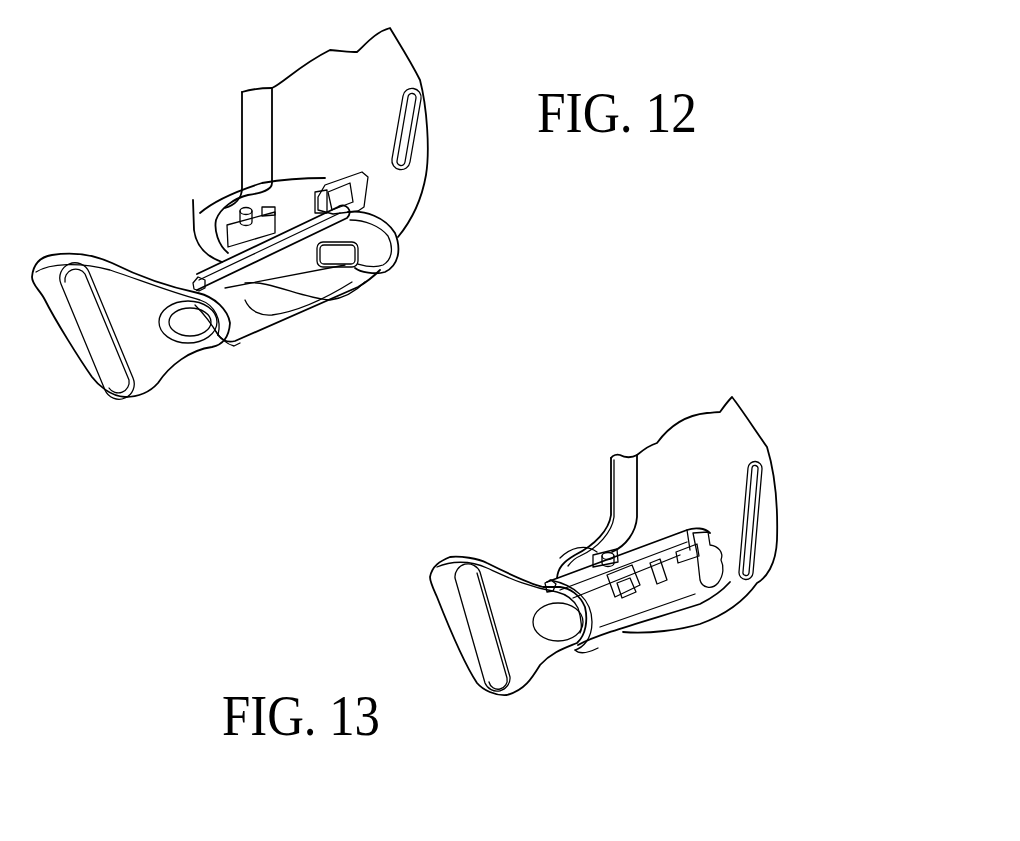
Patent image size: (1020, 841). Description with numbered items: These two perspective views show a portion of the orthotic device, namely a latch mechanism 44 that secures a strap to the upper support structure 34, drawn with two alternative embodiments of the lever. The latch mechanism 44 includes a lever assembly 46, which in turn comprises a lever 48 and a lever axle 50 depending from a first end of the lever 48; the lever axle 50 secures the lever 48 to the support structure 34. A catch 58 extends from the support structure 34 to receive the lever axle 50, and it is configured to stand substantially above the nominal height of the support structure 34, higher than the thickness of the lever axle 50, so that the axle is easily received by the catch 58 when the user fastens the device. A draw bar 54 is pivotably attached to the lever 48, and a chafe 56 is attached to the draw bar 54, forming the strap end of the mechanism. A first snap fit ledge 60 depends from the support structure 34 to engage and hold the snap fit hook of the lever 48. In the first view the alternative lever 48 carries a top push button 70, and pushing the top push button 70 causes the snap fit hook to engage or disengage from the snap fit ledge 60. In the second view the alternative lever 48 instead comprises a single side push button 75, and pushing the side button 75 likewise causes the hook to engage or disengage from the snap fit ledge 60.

In FIG. 12, the upper support structure 34 is at (388, 70).
In FIG. 13, the upper support structure 34 is at (728, 443).
In FIG. 12, the latch mechanism 44 is at (300, 335).
In FIG. 13, the latch mechanism 44 is at (658, 647).
In FIG. 12, the lever assembly 46 is at (236, 348).
In FIG. 13, the lever assembly 46 is at (596, 654).
In FIG. 12, the lever 48 is at (272, 160).
In FIG. 12, the lever axle 50 is at (246, 207).
In FIG. 13, the lever axle 50 is at (605, 553).
In FIG. 12, the draw bar 54 is at (185, 278).
In FIG. 13, the draw bar 54 is at (547, 585).
In FIG. 12, the chafe 56 is at (78, 347).
In FIG. 13, the chafe 56 is at (445, 603).
In FIG. 12, the catch 58 is at (193, 200).
In FIG. 12, the first snap fit ledge 60 is at (339, 172).
In FIG. 12, the top push button 70 is at (362, 258).
In FIG. 13, the single side push button 75 is at (710, 575).